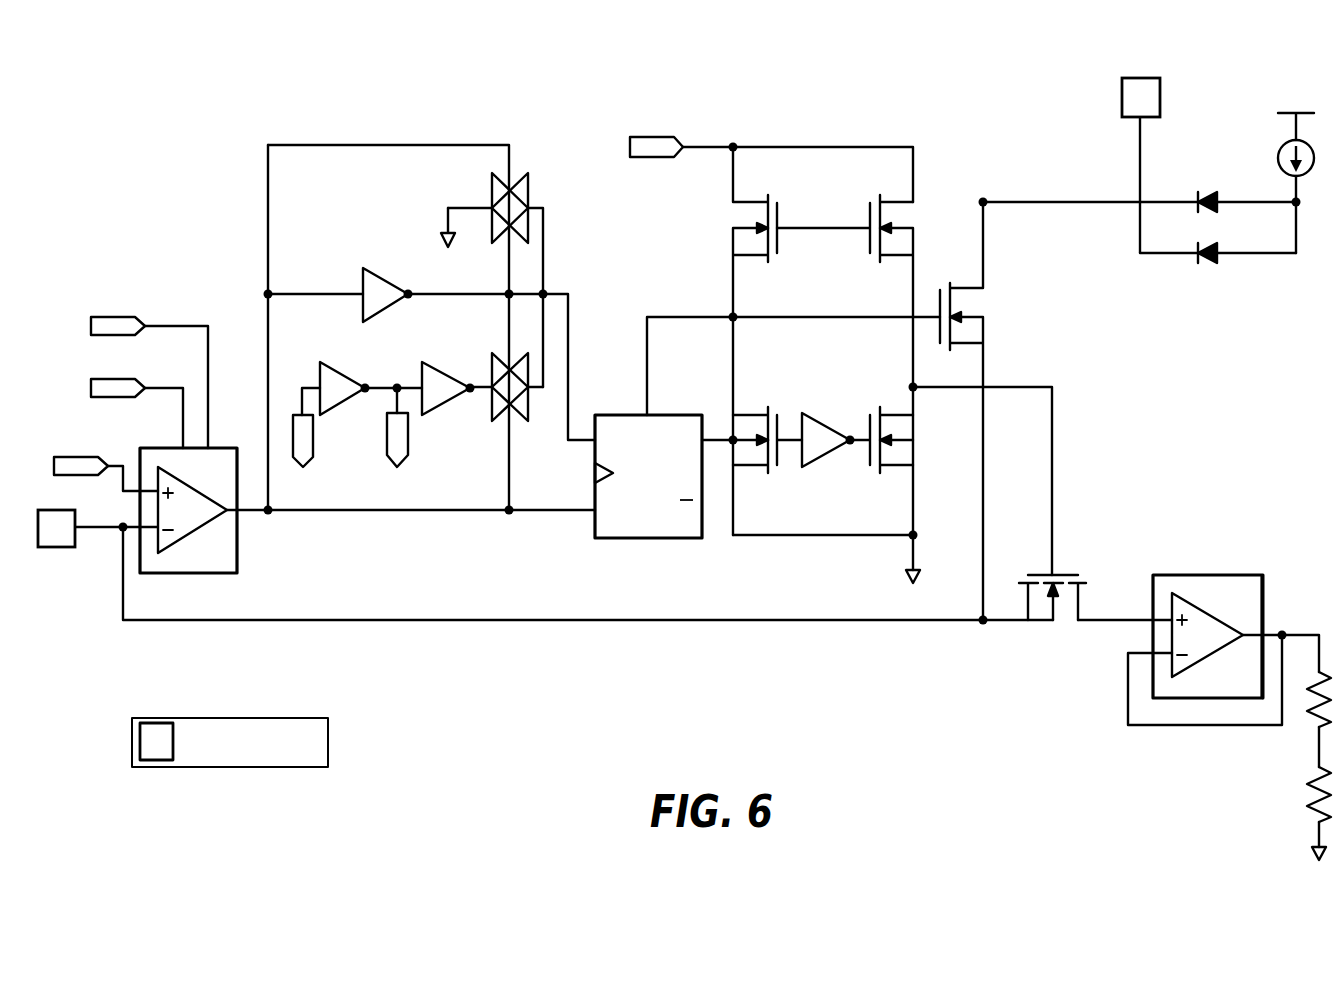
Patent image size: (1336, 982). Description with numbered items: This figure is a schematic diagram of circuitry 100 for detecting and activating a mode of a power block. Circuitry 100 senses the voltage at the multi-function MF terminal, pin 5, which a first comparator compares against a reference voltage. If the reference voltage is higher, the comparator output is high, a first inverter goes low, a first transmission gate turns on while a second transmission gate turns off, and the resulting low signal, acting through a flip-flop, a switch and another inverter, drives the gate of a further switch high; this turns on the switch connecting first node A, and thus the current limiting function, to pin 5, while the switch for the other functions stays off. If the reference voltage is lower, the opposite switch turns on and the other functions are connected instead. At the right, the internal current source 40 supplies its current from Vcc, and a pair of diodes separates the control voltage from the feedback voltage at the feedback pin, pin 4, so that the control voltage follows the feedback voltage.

The internal current source 40 is at (1280, 147).
The circuitry for detecting and activating a mode 100 is at (683, 468).
The Pin 4 feedback pin 4 is at (1091, 164).
The multi-function (MF) terminal pin 5 is at (96, 542).